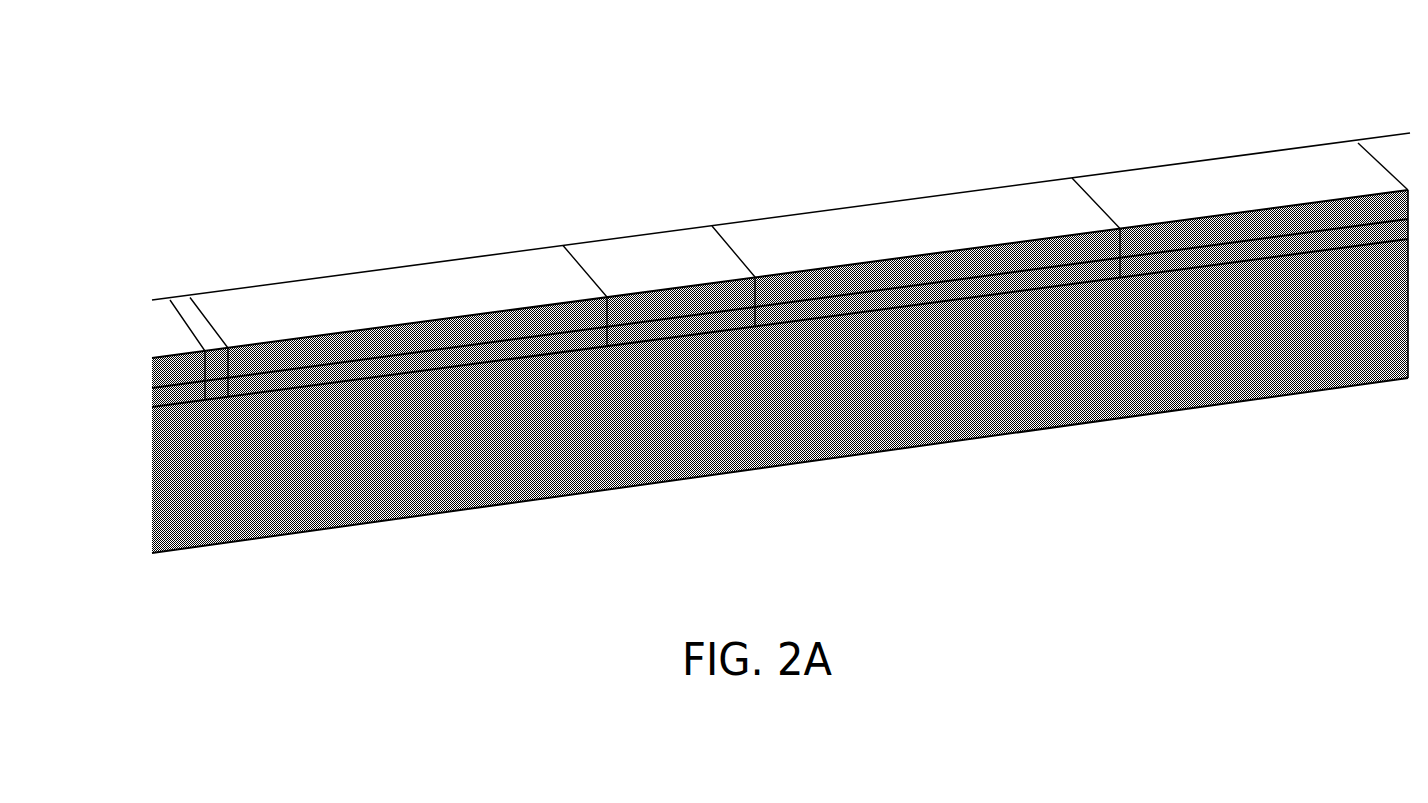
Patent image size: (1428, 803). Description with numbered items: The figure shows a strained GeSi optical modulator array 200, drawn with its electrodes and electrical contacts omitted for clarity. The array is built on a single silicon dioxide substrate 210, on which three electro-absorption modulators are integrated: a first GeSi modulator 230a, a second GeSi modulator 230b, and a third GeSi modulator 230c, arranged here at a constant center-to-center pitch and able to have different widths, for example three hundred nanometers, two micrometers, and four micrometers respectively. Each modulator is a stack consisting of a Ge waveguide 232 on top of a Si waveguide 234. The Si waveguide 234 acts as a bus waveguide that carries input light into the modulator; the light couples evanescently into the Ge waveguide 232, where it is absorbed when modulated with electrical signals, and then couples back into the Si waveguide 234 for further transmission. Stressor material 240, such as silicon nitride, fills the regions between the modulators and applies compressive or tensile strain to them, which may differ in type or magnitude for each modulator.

The strained GeSi optical modulator array 200 is at (257, 207).
The silicon dioxide substrate 210 is at (1037, 387).
The first GeSi modulator 230a is at (188, 305).
The second GeSi modulator 230b is at (643, 253).
The third GeSi modulator 230c is at (1208, 170).
The Ge waveguide 232 is at (1155, 238).
The Si waveguide 234 is at (1318, 240).
The stressor material 240 is at (393, 287).